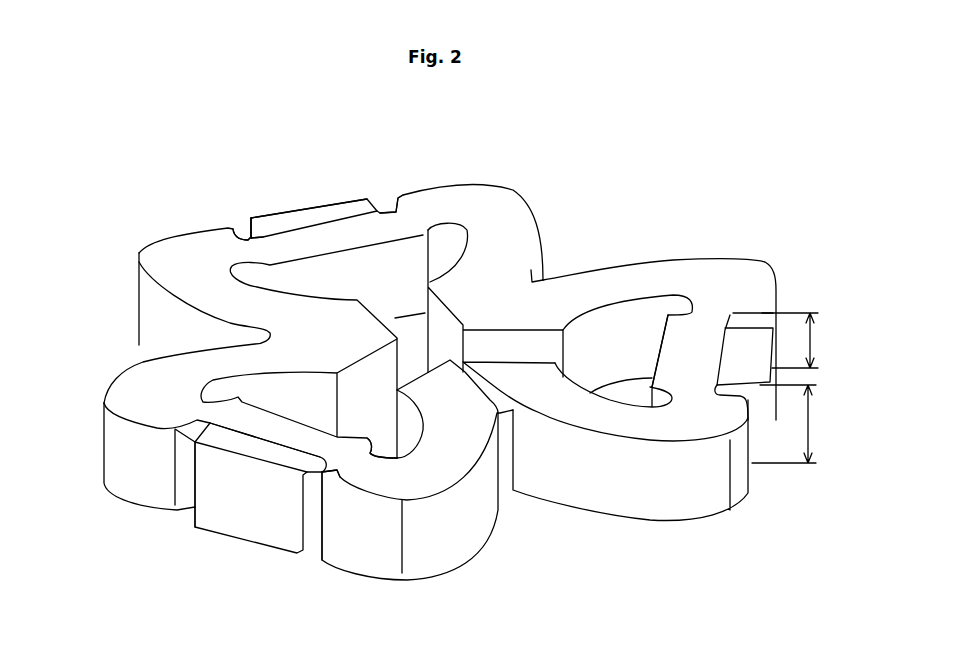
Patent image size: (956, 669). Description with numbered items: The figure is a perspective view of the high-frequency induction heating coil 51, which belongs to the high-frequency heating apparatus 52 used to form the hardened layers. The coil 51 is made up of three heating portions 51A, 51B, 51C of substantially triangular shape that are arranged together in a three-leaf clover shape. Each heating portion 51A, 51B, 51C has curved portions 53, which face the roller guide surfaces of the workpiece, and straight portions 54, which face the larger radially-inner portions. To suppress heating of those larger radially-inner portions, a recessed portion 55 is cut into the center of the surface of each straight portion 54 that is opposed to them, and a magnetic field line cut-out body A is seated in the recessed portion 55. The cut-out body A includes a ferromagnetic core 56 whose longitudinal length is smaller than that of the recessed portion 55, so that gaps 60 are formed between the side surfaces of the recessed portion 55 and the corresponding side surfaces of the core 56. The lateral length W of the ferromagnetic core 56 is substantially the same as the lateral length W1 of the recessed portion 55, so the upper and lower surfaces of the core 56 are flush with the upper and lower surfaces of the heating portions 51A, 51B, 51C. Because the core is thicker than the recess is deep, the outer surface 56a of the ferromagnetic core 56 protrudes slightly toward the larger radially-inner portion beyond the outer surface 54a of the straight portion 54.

The high-frequency induction heating coil 51 is at (524, 195).
The heating portion 51A is at (697, 483).
The heating portion 51B is at (423, 212).
The heating portion 51C is at (375, 547).
The high-frequency heating apparatus 52 is at (643, 208).
The curved portion 53 is at (203, 290).
The straight portion 54 is at (338, 235).
The outer surface of the straight portion 54a is at (135, 472).
The recessed portion 55 is at (353, 215).
The ferromagnetic core 56 is at (290, 207).
The outer surface of the ferromagnetic core 56a is at (223, 510).
The gap 60 is at (240, 228).
The magnetic field line cut-out body A is at (277, 220).
The lateral length of the ferromagnetic core W is at (789, 424).
The lateral length of the recessed portion W1 is at (804, 340).